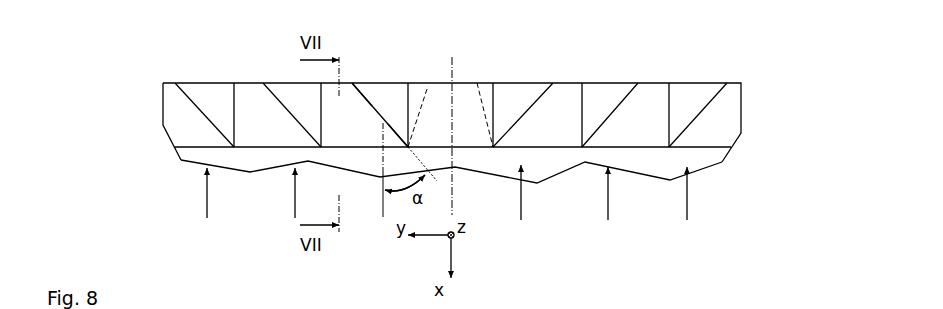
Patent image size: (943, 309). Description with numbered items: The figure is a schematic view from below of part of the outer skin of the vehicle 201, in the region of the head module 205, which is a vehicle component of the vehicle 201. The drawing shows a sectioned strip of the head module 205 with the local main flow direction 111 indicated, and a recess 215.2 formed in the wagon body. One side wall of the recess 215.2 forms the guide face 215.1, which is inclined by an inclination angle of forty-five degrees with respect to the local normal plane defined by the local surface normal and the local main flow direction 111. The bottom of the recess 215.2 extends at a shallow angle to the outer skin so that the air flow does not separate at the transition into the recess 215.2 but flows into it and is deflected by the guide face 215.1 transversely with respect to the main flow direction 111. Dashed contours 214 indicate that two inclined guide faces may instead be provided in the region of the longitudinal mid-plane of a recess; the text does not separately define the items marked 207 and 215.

The vehicle 201 is at (763, 50).
The head module 205 is at (212, 73).
The chord section 207 is at (292, 80).
The diagonal strut 215 is at (380, 105).
The recess 215.2 is at (343, 100).
The guide face 215.1 is at (392, 130).
The dashed contours 214 is at (422, 115).
The local main flow direction 111 is at (380, 213).